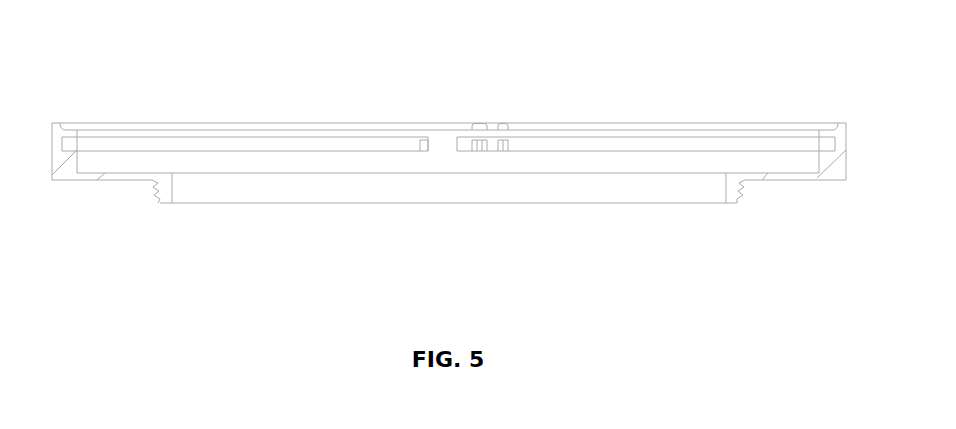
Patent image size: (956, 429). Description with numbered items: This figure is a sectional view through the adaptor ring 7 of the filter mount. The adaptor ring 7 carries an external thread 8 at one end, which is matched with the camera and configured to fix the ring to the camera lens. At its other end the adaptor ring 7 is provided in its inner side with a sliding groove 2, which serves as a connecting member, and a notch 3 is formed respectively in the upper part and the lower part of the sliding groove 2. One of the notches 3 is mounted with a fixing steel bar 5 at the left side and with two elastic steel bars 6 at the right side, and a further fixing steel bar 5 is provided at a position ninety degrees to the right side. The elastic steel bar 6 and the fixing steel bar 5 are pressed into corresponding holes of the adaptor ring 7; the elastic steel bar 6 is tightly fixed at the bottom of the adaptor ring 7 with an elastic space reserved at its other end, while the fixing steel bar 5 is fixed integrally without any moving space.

The sliding groove 2 is at (362, 144).
The notch 3 is at (448, 135).
The fixing steel bar 5 is at (424, 147).
The elastic steel bar 6 is at (477, 145).
The adaptor ring 7 is at (91, 162).
The external thread 8 is at (157, 197).